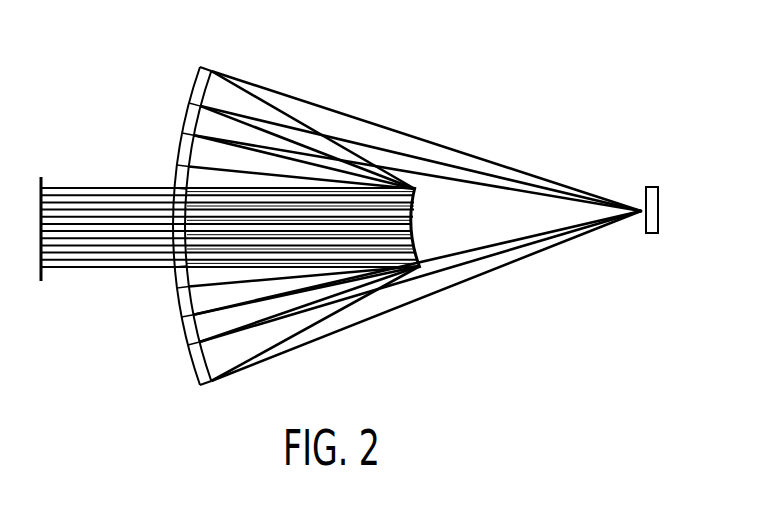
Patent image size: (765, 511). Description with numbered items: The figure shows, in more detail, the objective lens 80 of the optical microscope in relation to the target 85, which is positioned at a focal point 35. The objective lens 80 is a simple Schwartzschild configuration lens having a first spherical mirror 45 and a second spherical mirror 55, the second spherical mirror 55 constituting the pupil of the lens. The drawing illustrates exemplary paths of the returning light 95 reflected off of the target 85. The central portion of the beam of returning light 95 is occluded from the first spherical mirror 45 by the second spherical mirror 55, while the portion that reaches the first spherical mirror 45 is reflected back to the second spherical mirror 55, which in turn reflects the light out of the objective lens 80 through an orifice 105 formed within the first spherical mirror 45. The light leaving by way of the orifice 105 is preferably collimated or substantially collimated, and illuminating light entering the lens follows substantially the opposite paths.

The focal point 35 is at (633, 199).
The first spherical mirror 45 is at (186, 113).
The second spherical mirror 55 is at (416, 232).
The objective lens 80 is at (452, 306).
The target 85 is at (655, 236).
The returning light 95 is at (130, 186).
The orifice 105 is at (171, 267).